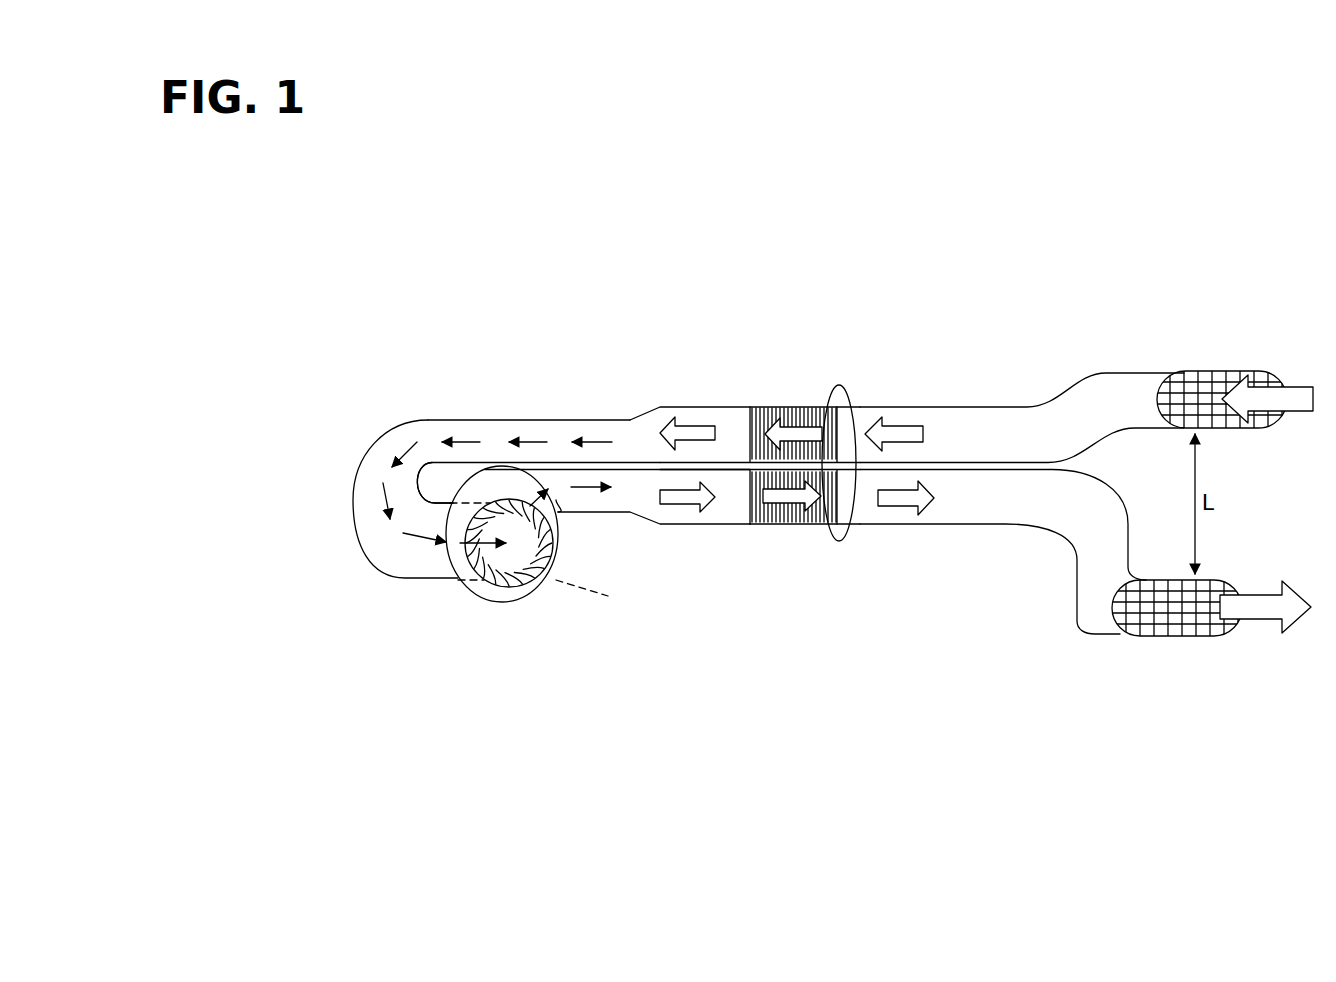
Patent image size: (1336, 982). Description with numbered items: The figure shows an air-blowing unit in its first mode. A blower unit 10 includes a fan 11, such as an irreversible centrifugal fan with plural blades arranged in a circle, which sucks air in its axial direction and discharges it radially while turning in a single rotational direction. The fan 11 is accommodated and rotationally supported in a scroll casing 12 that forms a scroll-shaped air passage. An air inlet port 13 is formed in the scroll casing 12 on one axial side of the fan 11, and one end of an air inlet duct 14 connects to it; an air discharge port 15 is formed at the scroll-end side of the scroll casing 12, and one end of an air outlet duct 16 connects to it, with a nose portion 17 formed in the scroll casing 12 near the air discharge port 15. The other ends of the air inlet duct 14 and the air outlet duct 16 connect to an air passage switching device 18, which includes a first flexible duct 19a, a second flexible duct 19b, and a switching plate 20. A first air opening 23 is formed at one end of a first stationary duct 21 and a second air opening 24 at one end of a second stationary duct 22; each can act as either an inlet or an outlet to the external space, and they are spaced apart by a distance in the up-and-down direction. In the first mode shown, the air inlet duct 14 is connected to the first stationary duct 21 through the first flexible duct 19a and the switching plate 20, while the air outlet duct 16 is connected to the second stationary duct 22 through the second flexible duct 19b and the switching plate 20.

The blower unit 10 is at (532, 583).
The fan 11 is at (537, 580).
The scroll casing 12 is at (478, 595).
The air inlet port 13 is at (543, 559).
The air inlet duct 14 is at (467, 419).
The air discharge port 15 is at (507, 487).
The air outlet duct 16 is at (693, 524).
The nose portion 17 is at (558, 513).
The air passage switching device 18 is at (745, 476).
The first flexible duct 19a is at (762, 406).
The second flexible duct 19b is at (792, 524).
The switching plate 20 is at (840, 397).
The first stationary duct 21 is at (988, 406).
The second stationary duct 22 is at (960, 527).
The first air opening 23 is at (1204, 371).
The second air opening 24 is at (1178, 637).